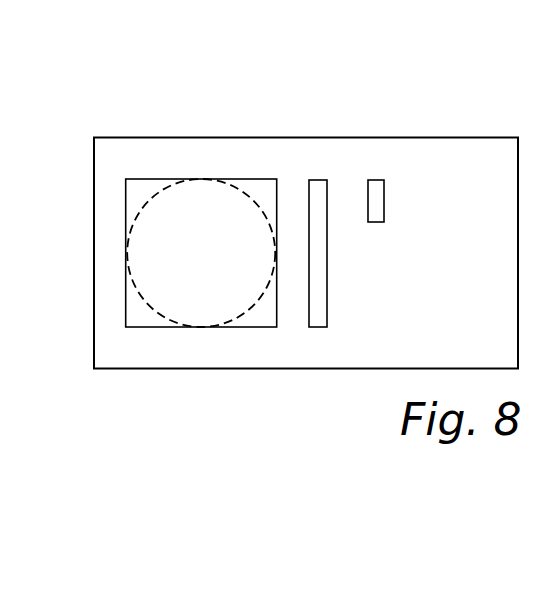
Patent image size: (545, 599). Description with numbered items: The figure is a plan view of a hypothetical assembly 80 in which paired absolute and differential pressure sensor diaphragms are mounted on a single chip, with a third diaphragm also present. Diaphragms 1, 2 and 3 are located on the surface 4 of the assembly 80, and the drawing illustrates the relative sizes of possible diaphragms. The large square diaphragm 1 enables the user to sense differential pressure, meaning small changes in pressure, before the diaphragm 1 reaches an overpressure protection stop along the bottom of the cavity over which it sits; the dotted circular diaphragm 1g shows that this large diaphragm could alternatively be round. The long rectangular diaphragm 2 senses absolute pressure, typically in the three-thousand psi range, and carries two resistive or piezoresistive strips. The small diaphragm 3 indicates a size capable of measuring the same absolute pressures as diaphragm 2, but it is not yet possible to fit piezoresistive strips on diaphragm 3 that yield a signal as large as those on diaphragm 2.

The hypothetical assembly 80 is at (278, 100).
The diaphragm 1 is at (252, 200).
The diaphragm 1g is at (247, 310).
The diaphragm 2 is at (327, 310).
The diaphragm 3 is at (387, 202).
The surface 4 is at (467, 344).